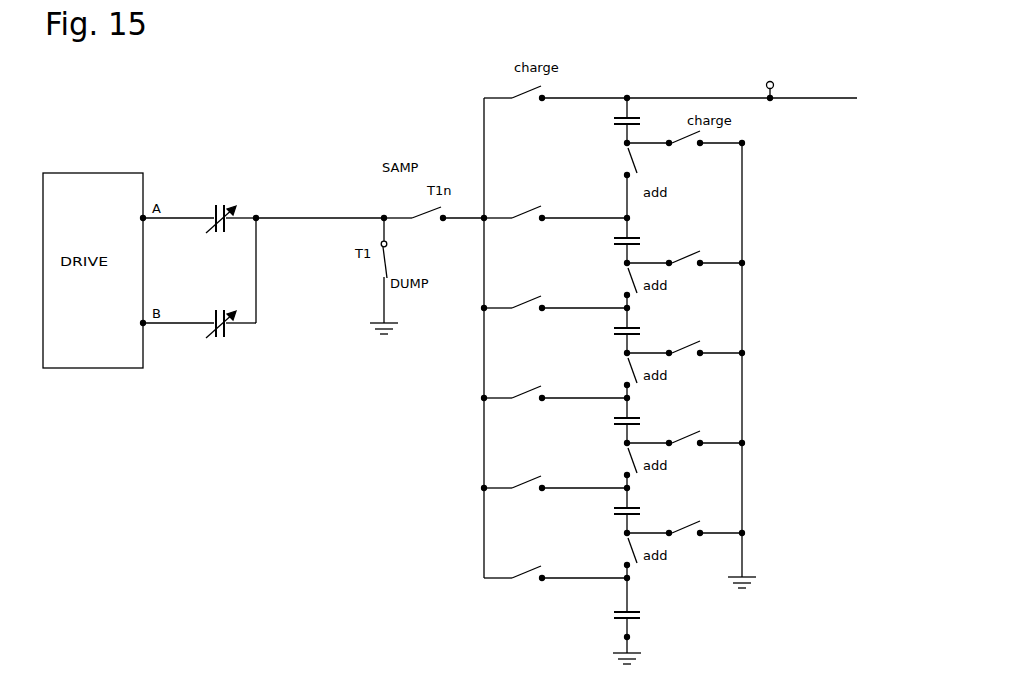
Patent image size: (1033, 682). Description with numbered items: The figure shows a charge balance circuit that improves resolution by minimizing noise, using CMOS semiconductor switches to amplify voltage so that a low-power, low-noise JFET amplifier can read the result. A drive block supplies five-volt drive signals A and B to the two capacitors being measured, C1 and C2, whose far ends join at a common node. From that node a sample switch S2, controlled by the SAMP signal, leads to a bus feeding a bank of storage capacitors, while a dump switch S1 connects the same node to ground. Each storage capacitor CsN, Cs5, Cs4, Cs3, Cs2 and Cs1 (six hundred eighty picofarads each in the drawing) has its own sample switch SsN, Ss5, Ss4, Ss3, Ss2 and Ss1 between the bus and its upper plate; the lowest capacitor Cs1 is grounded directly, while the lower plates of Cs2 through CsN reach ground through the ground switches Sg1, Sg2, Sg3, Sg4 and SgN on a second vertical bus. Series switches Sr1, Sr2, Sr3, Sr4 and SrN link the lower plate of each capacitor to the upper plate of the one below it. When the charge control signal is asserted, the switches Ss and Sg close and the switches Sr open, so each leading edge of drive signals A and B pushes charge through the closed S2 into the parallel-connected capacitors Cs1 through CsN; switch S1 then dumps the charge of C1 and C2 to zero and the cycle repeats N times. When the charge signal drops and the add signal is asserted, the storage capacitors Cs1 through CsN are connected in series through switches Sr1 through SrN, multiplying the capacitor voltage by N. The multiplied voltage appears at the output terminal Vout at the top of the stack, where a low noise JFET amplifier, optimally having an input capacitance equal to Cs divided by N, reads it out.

The capacitor C1 is at (199, 229).
The capacitor C2 is at (199, 334).
The switch S1 is at (390, 276).
The switch S2 is at (434, 224).
The output voltage Vout is at (742, 78).
The switch SsN is at (555, 103).
The switch Ss5 is at (555, 223).
The switch Ss4 is at (555, 313).
The switch Ss3 is at (555, 403).
The switch Ss2 is at (555, 493).
The switch Ss1 is at (555, 583).
The storage capacitor CsN is at (606, 121).
The storage capacitor Cs5 is at (609, 242).
The storage capacitor Cs4 is at (609, 332).
The storage capacitor Cs3 is at (609, 422).
The storage capacitor Cs2 is at (609, 512).
The storage capacitor Cs1 is at (608, 620).
The switch SrN is at (614, 183).
The switch Sr4 is at (613, 288).
The switch Sr3 is at (613, 378).
The switch Sr2 is at (613, 468).
The switch Sr1 is at (613, 558).
The switch SgN is at (686, 148).
The switch Sg4 is at (686, 268).
The switch Sg3 is at (686, 358).
The switch Sg2 is at (686, 448).
The switch Sg1 is at (686, 538).